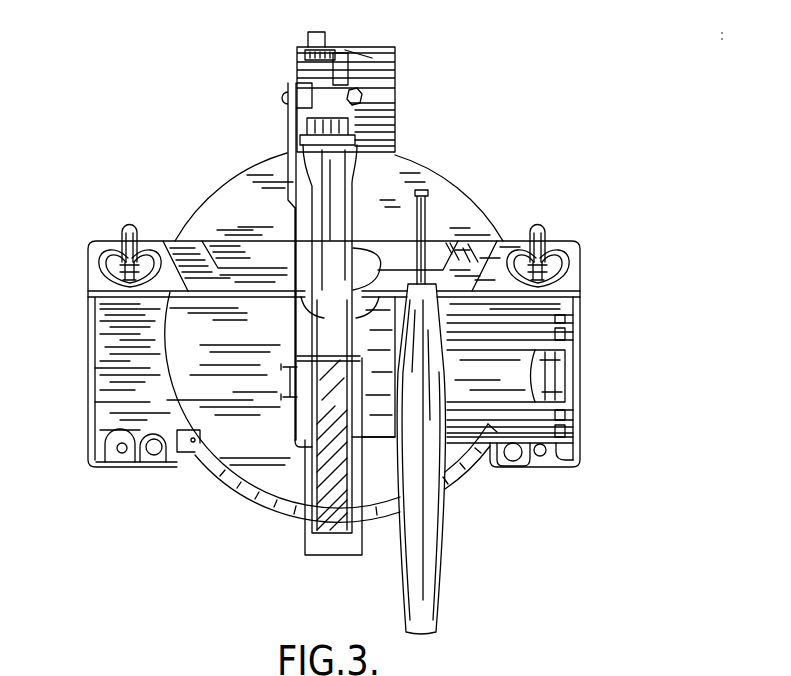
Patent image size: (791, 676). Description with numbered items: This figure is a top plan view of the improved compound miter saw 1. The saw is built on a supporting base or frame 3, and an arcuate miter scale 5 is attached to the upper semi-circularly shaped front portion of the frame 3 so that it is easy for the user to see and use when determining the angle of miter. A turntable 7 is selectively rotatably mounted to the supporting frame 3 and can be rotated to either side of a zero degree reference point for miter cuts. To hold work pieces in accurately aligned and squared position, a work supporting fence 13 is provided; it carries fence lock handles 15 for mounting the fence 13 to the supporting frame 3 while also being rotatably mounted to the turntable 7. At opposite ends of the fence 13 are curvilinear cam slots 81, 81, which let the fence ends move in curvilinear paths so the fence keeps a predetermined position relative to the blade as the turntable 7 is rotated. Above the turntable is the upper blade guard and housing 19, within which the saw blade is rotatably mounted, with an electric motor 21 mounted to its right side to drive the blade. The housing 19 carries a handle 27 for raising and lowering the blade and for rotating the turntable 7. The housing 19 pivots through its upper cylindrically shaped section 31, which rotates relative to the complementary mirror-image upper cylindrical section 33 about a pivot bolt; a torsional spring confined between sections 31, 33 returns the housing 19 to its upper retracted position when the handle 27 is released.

The compound miter saw 1 is at (508, 58).
The supporting base or frame 3 is at (125, 377).
The arcuate miter scale 5 is at (270, 500).
The turntable 7 is at (230, 207).
The work supporting fence 13 is at (565, 277).
The fence lock handles 15 is at (127, 227).
The upper blade guard and housing 19 is at (334, 220).
The electric motor 21 is at (512, 338).
The handle 27 is at (447, 527).
The upper cylindrically shaped section 31 is at (300, 65).
The upper cylindrical section 33 is at (377, 83).
The curvilinear cam slots 81 is at (95, 260).